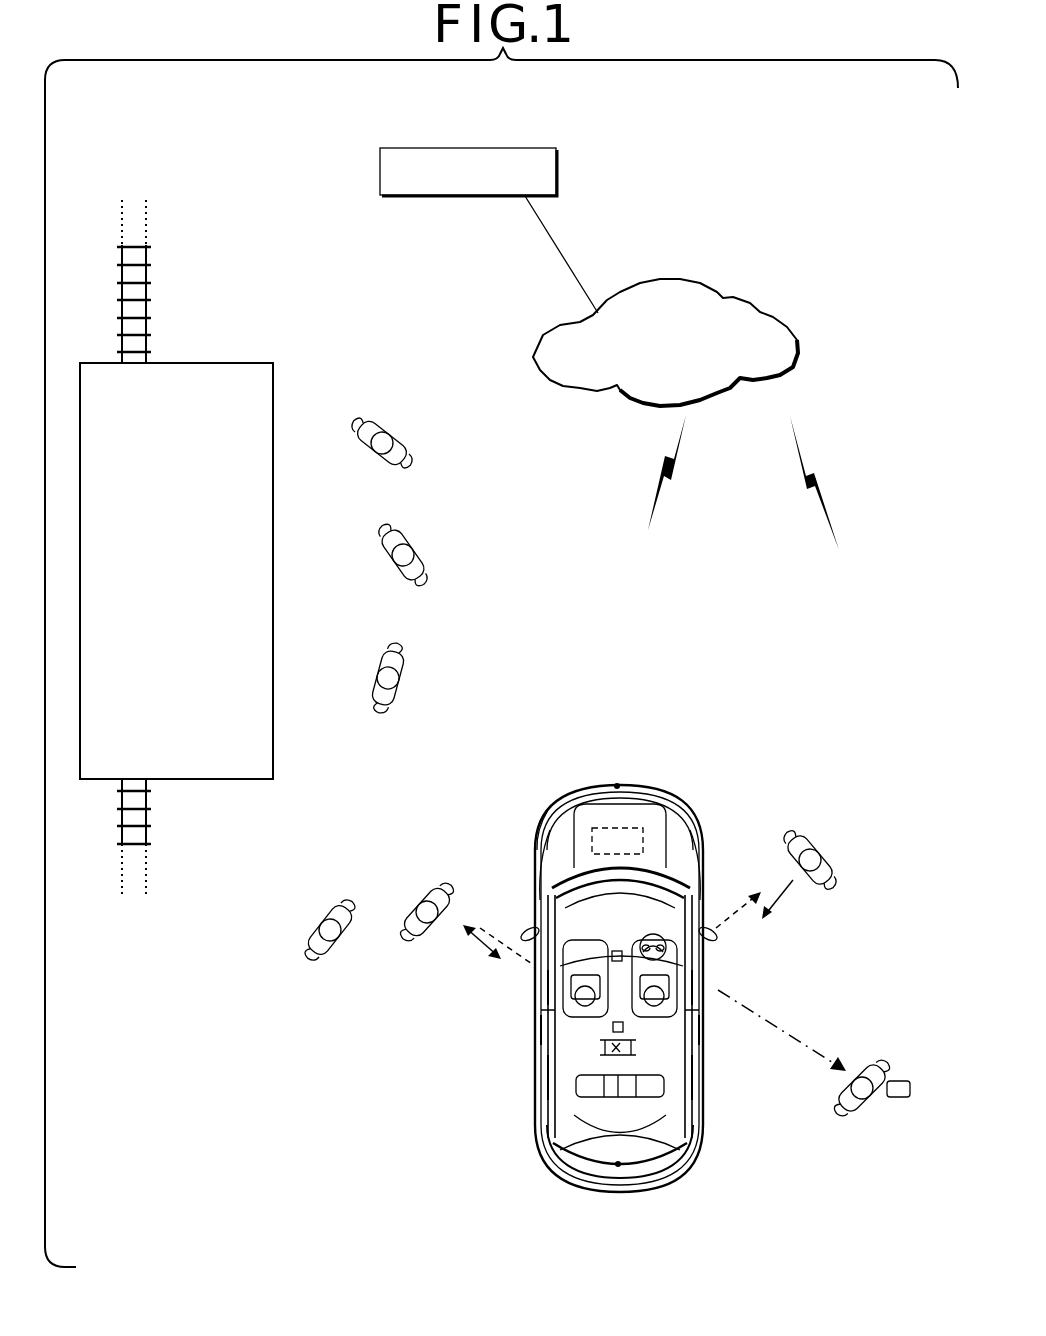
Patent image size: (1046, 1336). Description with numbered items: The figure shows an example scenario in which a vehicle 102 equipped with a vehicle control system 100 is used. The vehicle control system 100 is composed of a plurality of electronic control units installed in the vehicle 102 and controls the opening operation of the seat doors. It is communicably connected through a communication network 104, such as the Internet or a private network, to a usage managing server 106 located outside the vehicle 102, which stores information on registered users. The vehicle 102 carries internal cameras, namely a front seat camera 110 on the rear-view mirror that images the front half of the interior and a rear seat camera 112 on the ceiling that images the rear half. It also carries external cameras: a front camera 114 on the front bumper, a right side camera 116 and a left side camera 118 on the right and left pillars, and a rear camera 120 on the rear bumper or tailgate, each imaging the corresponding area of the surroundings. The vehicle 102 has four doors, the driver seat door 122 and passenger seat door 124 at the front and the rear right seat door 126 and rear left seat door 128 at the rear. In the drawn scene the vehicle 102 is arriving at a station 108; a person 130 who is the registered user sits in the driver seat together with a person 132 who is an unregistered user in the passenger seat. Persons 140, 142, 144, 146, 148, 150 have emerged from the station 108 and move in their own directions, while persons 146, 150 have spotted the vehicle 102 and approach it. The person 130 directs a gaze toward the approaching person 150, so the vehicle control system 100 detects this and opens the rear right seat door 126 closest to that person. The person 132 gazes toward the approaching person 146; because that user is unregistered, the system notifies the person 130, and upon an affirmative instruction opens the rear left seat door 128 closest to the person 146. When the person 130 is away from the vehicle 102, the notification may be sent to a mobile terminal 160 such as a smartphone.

The vehicle control system 100 is at (630, 828).
The vehicle 102 is at (547, 810).
The communication network 104 is at (621, 307).
The usage managing server 106 is at (415, 148).
The station 108 is at (229, 362).
The front seat camera 110 is at (613, 950).
The rear seat camera 112 is at (650, 1066).
The front camera 114 is at (615, 783).
The right side camera 116 is at (688, 1022).
The left side camera 118 is at (535, 1022).
The rear camera 120 is at (618, 1168).
The driver seat door 122 is at (701, 979).
The passenger seat door 124 is at (535, 985).
The rear right seat door 126 is at (703, 1080).
The rear left seat door 128 is at (535, 1078).
The person 130 is at (642, 932).
The person 132 is at (579, 956).
The person 140 is at (362, 418).
The person 142 is at (383, 535).
The person 144 is at (376, 654).
The person 146 is at (436, 890).
The person 148 is at (338, 902).
The person 150 is at (824, 851).
The mobile terminal 160 is at (900, 1080).